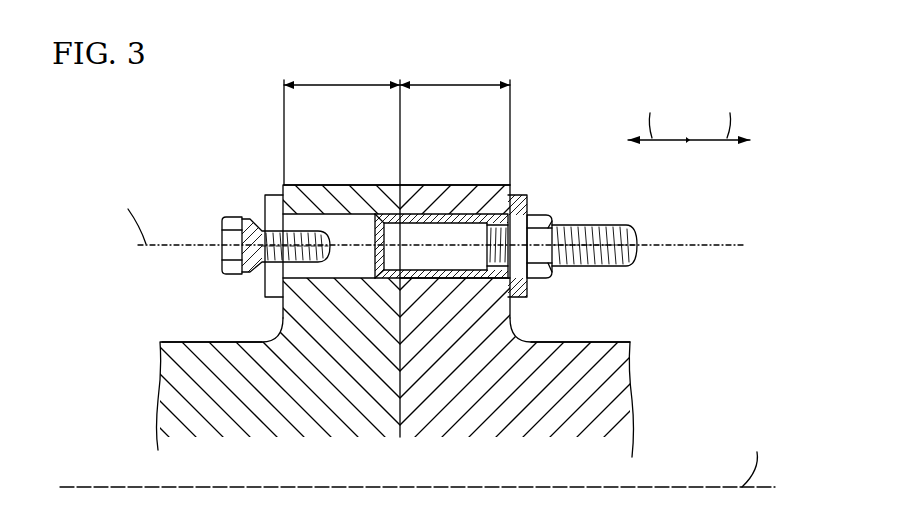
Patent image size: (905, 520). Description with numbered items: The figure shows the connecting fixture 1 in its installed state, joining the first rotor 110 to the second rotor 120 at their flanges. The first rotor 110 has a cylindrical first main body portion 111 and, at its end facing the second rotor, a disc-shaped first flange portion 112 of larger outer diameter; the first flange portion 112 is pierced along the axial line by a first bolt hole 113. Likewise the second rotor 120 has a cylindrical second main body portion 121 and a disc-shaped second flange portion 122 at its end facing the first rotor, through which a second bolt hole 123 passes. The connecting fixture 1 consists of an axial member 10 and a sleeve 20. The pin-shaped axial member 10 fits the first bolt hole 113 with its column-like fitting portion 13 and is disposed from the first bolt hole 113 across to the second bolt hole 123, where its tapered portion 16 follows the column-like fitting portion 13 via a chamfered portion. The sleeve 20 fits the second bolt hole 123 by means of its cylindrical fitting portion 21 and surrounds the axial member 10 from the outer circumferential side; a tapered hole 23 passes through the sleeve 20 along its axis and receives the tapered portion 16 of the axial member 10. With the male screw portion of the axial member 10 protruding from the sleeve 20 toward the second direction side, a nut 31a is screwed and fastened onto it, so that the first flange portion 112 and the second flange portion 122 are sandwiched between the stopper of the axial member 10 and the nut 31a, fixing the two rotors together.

The connecting fixture 1 is at (558, 88).
The axial member 10 is at (359, 203).
The column-like fitting portion 13 is at (343, 258).
The tapered portion 16 is at (420, 234).
The sleeve 20 is at (475, 202).
The cylindrical fitting portion 21 is at (461, 214).
The tapered hole 23 is at (476, 262).
The nut 31a is at (541, 214).
The first rotor 110 is at (149, 428).
The first main body portion 111 is at (195, 358).
The first flange portion 112 is at (313, 190).
The first bolt hole 113 is at (294, 224).
The second rotor 120 is at (644, 417).
The second main body portion 121 is at (592, 358).
The second flange portion 122 is at (438, 190).
The second bolt hole 123 is at (426, 262).